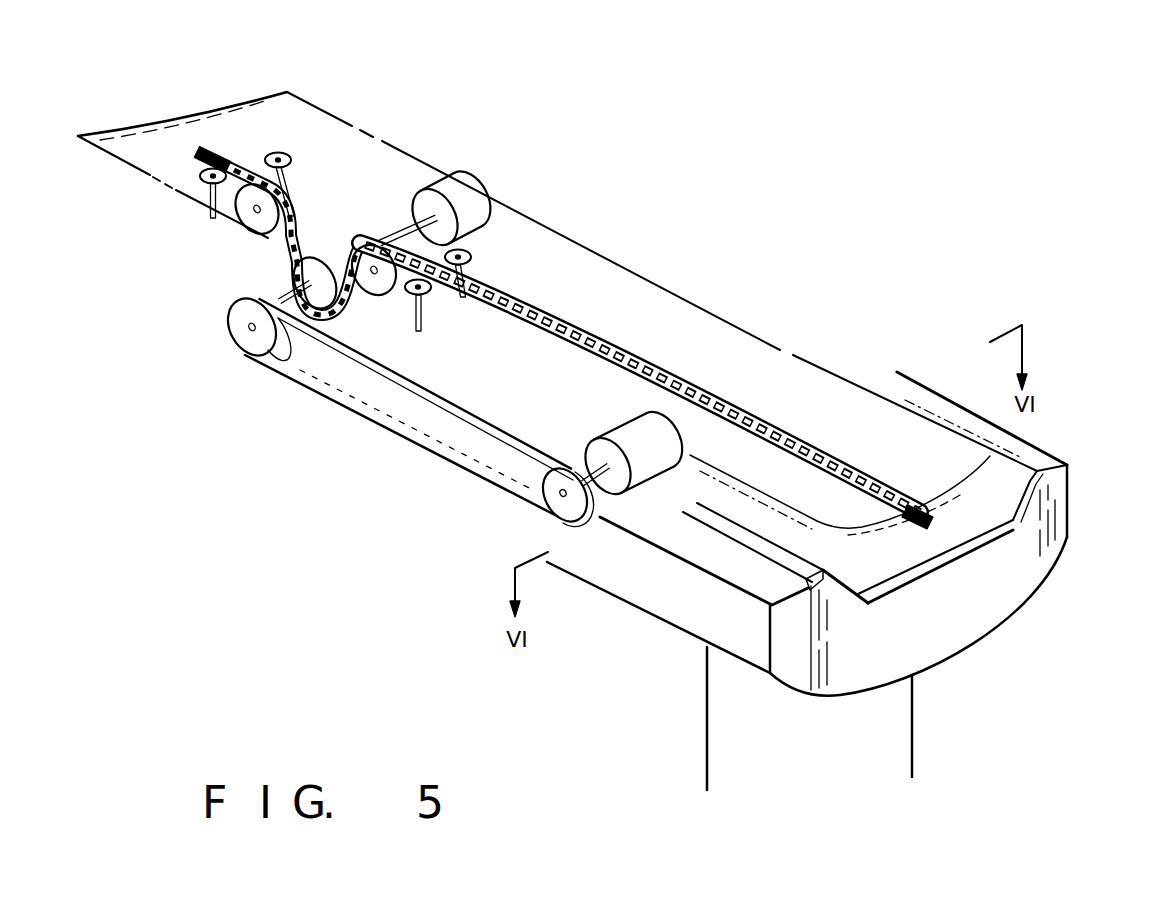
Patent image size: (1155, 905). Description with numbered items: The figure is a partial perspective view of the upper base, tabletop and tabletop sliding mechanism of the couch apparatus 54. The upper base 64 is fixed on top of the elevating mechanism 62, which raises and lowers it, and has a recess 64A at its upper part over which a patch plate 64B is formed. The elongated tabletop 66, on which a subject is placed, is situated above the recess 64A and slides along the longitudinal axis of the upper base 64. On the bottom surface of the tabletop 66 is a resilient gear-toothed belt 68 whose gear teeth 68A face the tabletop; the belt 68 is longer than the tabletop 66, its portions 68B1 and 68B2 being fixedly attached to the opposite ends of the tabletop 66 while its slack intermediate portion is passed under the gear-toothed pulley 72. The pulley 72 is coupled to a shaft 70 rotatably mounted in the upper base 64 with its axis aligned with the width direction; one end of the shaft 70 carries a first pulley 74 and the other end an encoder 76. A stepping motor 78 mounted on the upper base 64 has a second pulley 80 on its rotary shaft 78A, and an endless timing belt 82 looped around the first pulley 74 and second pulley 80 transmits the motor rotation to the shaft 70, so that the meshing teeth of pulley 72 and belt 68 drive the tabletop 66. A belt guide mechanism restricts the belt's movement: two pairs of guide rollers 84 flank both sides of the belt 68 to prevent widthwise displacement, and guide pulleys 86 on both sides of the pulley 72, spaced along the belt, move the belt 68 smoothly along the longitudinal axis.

The couch apparatus 54 is at (767, 281).
The elevating mechanism 62 is at (665, 730).
The upper base 64 is at (958, 632).
The recess 64A is at (1034, 573).
The patch plate 64B is at (1008, 497).
The tabletop 66 is at (763, 357).
The gear-toothed belt 68 is at (572, 350).
The gear teeth 68A is at (540, 323).
The belt end portion 68B1 is at (935, 522).
The belt end portion 68B2 is at (213, 150).
The shaft 70 is at (412, 228).
The gear-toothed pulley 72 is at (295, 285).
The first pulley 74 is at (262, 350).
The encoder 76 is at (482, 207).
The stepping motor 78 is at (652, 470).
The rotary shaft 78A is at (603, 480).
The second pulley 80 is at (548, 497).
The endless belt 82 is at (432, 449).
The guide rollers 84 is at (233, 160).
The guide pulleys 86 is at (290, 207).